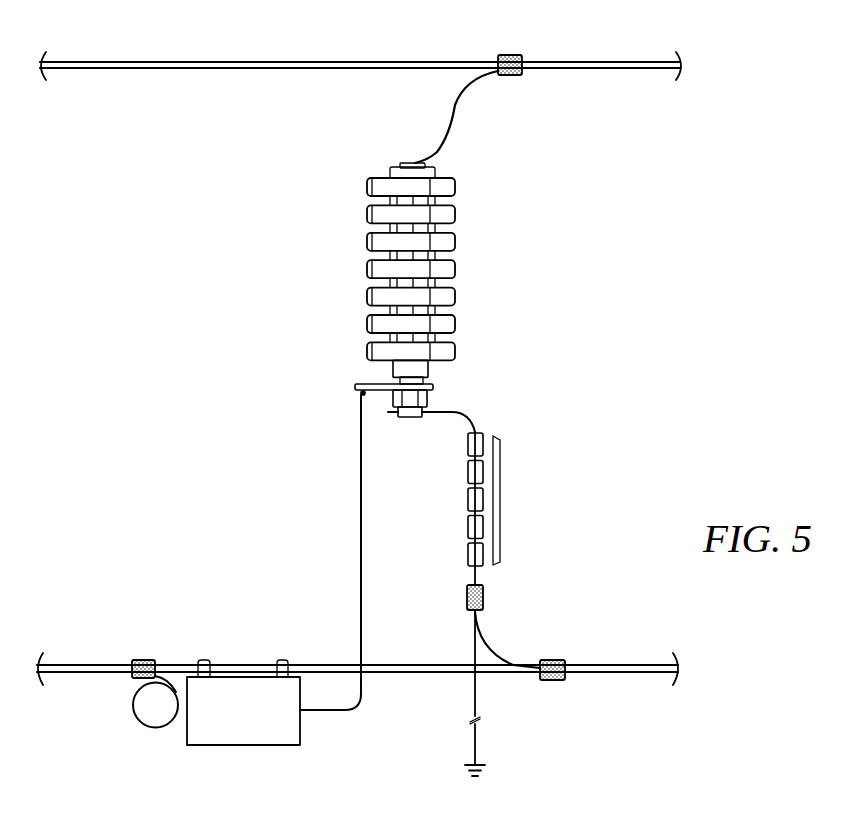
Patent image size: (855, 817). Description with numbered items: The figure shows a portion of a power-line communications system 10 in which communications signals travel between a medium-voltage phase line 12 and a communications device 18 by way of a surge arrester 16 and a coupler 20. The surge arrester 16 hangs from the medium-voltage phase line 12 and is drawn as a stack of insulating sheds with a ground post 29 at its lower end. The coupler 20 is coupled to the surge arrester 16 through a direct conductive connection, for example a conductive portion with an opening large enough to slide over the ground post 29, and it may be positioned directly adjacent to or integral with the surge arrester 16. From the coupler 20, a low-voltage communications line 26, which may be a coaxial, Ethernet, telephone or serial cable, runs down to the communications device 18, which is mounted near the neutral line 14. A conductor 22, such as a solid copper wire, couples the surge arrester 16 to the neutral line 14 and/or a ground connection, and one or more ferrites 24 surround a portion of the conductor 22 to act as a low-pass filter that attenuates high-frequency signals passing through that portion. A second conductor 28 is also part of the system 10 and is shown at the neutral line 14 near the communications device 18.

The power-line communications system 10 is at (218, 204).
The medium-voltage phase line 12 is at (602, 62).
The neutral line 14 is at (621, 674).
The surge arrester 16 is at (368, 243).
The communications device 18 is at (258, 723).
The coupler 20 is at (355, 386).
The conductor 22 is at (468, 586).
The ferrites 24 is at (500, 494).
The low-voltage communications line 26 is at (361, 530).
The conductor 28 is at (132, 705).
The ground post 29 is at (430, 378).